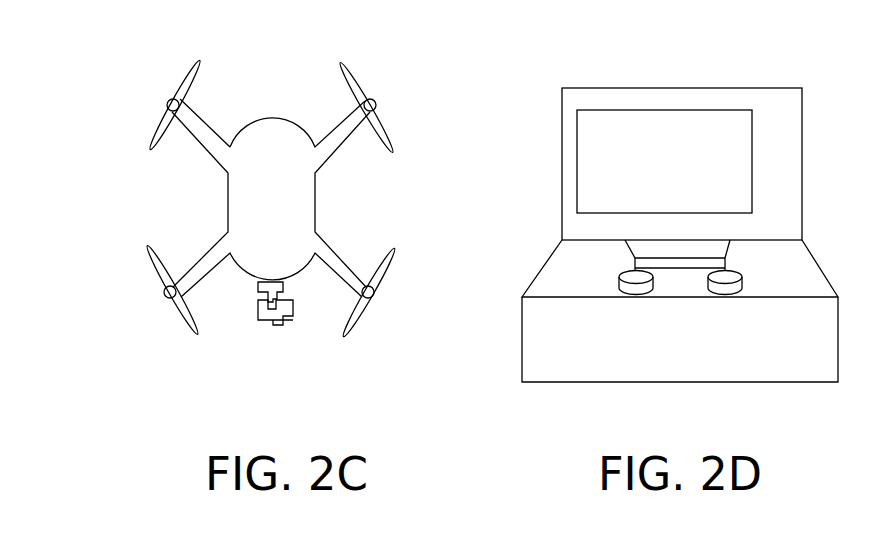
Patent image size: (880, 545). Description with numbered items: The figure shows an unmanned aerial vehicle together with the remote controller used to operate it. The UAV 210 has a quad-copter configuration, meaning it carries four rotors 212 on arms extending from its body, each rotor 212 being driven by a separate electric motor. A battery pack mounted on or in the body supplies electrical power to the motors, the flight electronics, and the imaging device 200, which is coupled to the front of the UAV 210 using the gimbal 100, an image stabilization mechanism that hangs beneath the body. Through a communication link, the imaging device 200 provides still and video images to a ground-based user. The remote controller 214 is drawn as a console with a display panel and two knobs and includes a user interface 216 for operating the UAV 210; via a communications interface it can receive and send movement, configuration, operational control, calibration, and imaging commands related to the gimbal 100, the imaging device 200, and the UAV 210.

In FIG. 2C, the UAV 210 is at (119, 101).
In FIG. 2C, the rotor 212 is at (357, 78).
In FIG. 2C, the gimbal 100 is at (288, 287).
In FIG. 2C, the imaging device 200 is at (256, 305).
In FIG. 2D, the remote controller 214 is at (581, 64).
In FIG. 2D, the user interface 216 is at (685, 173).